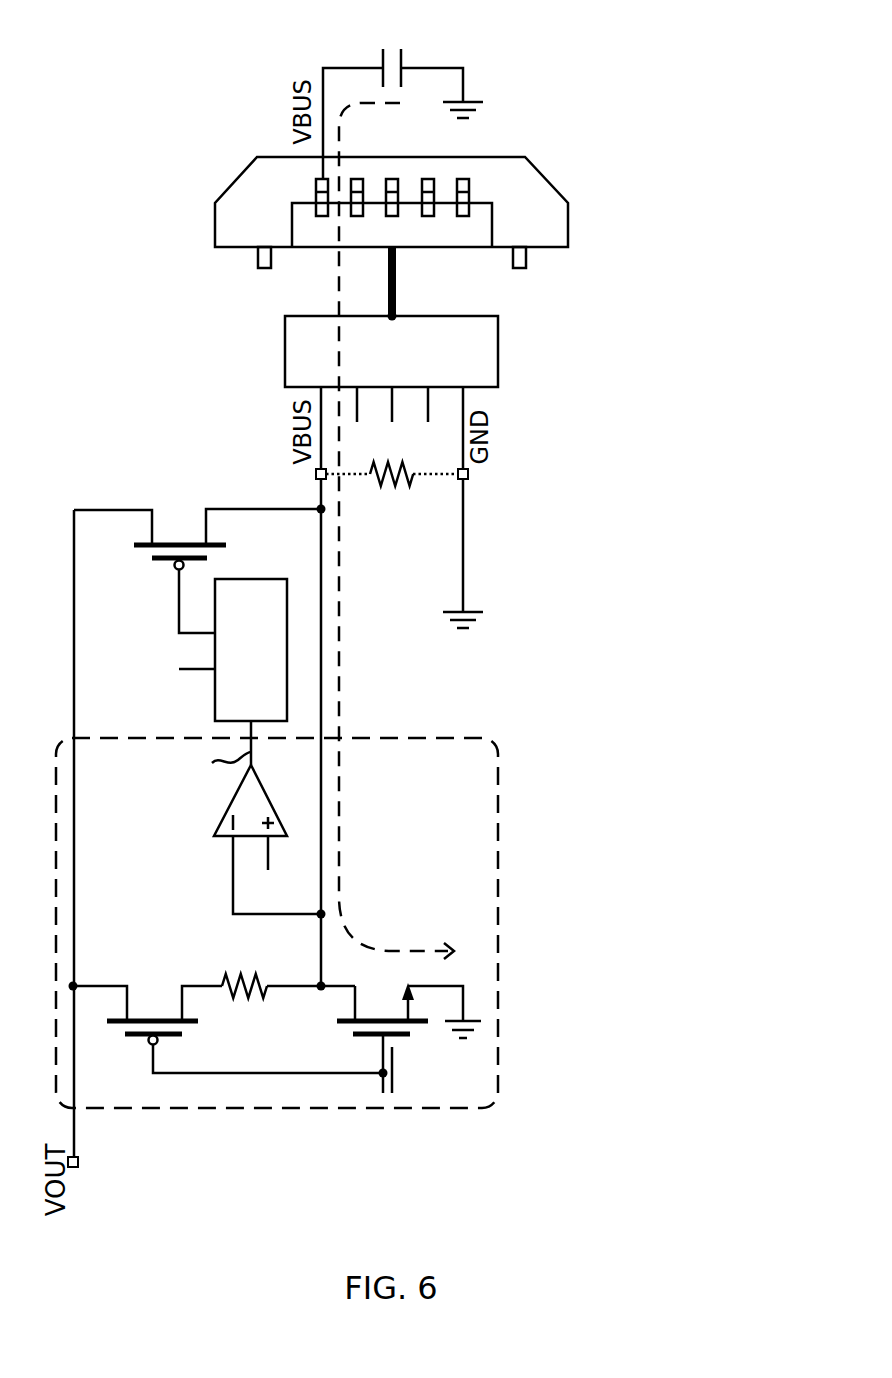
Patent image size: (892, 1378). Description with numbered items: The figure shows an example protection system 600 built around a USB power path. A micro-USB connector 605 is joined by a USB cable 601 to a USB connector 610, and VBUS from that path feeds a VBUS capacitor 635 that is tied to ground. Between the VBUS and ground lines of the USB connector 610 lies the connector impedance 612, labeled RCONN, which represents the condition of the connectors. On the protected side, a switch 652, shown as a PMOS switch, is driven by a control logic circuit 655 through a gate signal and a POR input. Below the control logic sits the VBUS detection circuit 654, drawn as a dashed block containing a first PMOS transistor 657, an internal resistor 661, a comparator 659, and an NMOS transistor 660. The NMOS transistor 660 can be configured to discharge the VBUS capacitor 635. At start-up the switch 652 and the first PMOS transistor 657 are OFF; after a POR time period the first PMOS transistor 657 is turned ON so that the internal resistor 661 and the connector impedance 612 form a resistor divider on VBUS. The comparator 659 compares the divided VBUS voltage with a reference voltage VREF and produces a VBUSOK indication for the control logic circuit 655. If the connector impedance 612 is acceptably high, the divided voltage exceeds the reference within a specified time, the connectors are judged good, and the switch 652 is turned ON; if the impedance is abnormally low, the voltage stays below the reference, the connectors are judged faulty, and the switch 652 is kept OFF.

The protection system 600 is at (680, 176).
The USB cable 601 is at (396, 274).
The micro-USB connector 605 is at (568, 208).
The USB connector 610 is at (500, 350).
The connector impedance 612 is at (408, 473).
The VBUS capacitor 635 is at (402, 57).
The switch 652 is at (176, 540).
The VBUS detection circuit 654 is at (498, 766).
The control logic circuit 655 is at (258, 579).
The first PMOS transistor 657 is at (150, 1018).
The comparator 659 is at (263, 787).
The NMOS transistor 660 is at (380, 1018).
The internal resistor 661 is at (265, 980).